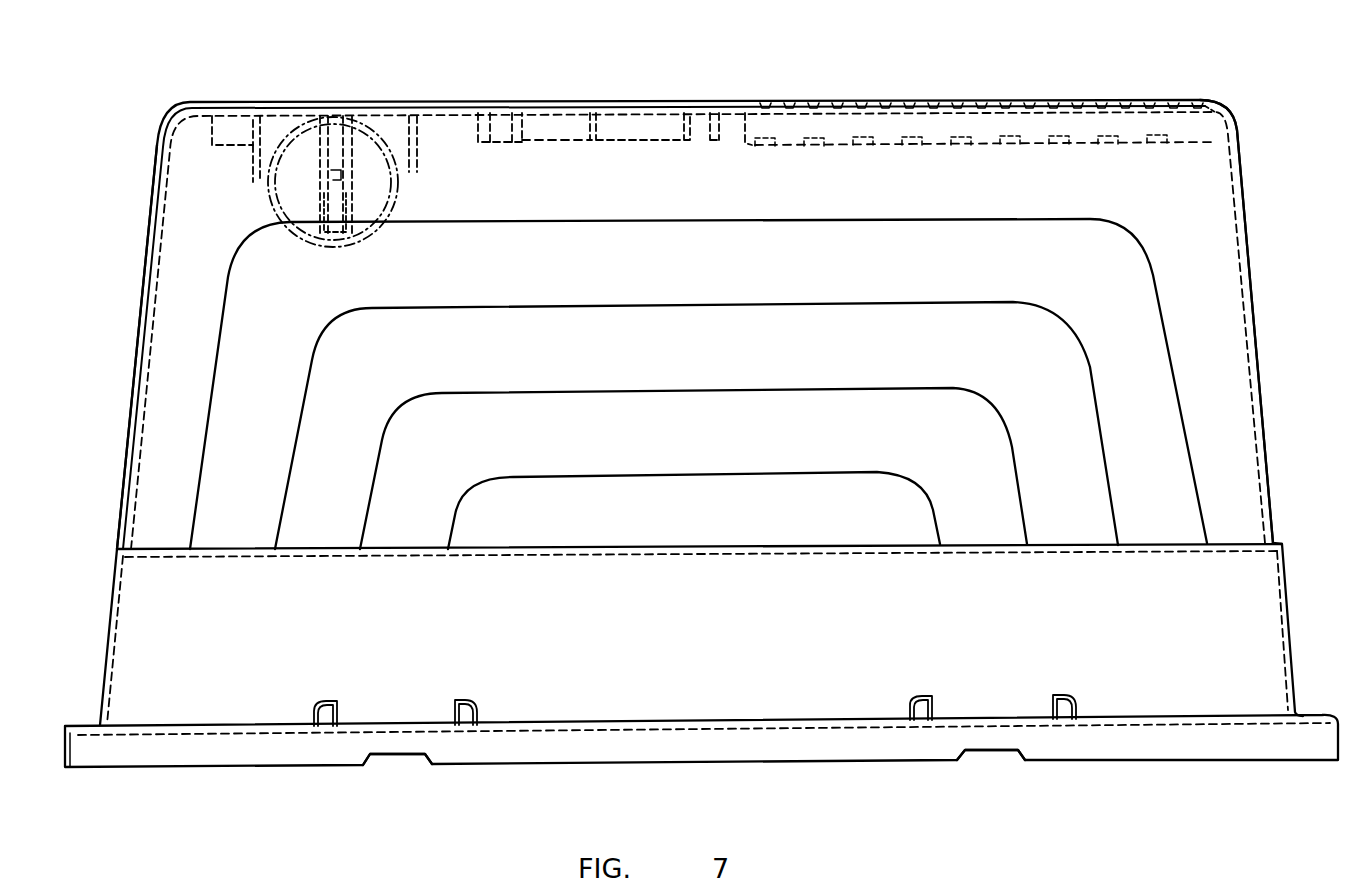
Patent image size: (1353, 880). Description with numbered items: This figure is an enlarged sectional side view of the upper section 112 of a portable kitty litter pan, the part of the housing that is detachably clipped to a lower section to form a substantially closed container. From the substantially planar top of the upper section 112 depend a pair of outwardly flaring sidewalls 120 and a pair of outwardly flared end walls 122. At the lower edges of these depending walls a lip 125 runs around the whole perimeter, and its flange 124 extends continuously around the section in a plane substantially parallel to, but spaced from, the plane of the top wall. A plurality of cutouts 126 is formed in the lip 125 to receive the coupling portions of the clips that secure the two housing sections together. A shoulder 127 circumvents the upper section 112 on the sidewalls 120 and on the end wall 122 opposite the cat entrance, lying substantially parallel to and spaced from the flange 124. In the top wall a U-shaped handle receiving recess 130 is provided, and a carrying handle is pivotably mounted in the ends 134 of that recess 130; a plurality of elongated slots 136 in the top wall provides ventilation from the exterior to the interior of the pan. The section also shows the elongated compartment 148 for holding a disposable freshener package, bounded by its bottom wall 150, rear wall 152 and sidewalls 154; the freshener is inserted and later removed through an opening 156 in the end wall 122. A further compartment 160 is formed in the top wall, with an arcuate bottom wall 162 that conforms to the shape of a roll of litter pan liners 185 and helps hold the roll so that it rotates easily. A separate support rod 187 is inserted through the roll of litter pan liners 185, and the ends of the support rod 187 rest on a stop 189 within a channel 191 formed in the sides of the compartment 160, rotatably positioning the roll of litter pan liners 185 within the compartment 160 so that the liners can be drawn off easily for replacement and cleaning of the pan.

The upper section 112 is at (322, 800).
The sidewalls 120 is at (730, 626).
The end walls 122 is at (128, 418).
The flange 124 is at (82, 726).
The lip 125 is at (70, 758).
The cutouts 126 is at (402, 765).
The shoulder 127 is at (1240, 545).
The handle receiving recess 130 is at (541, 113).
The ends of the recess 134 is at (683, 113).
The elongated slots 136 is at (820, 103).
The elongated compartment 148 is at (993, 126).
The bottom wall 150 is at (1170, 140).
The rear wall 152 is at (747, 145).
The sidewalls 154 is at (1120, 157).
The opening 156 is at (1228, 112).
The compartment 160 is at (267, 155).
The arcuate bottom wall 162 is at (268, 210).
The roll of litter pan liners 185 is at (380, 178).
The support rod 187 is at (337, 178).
The stop 189 is at (338, 236).
The channel 191 is at (330, 128).